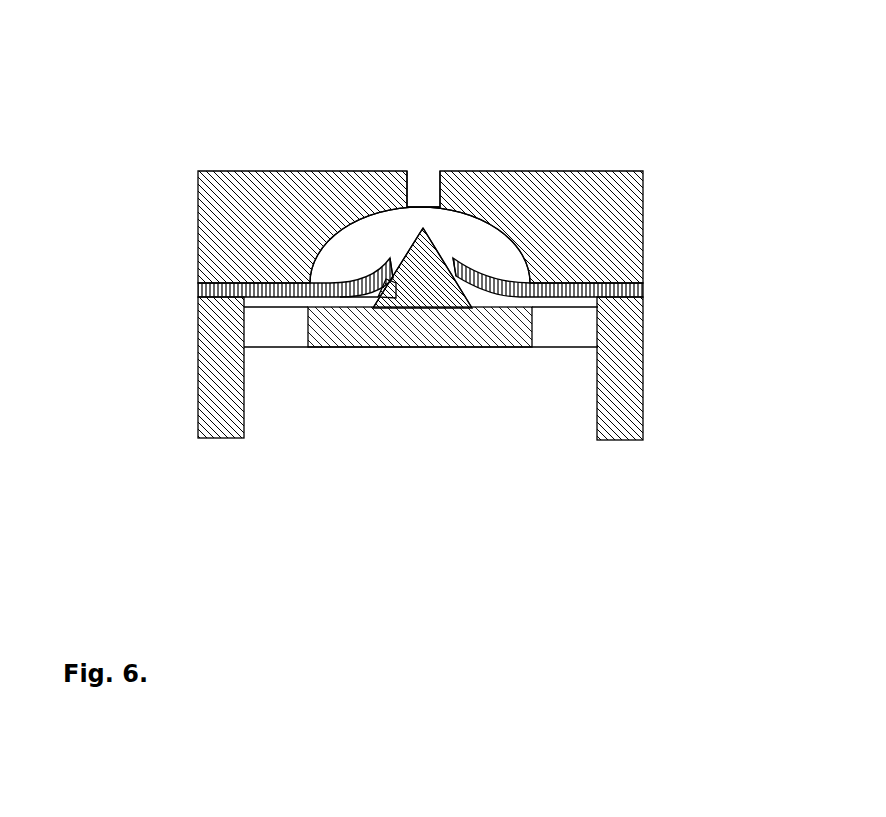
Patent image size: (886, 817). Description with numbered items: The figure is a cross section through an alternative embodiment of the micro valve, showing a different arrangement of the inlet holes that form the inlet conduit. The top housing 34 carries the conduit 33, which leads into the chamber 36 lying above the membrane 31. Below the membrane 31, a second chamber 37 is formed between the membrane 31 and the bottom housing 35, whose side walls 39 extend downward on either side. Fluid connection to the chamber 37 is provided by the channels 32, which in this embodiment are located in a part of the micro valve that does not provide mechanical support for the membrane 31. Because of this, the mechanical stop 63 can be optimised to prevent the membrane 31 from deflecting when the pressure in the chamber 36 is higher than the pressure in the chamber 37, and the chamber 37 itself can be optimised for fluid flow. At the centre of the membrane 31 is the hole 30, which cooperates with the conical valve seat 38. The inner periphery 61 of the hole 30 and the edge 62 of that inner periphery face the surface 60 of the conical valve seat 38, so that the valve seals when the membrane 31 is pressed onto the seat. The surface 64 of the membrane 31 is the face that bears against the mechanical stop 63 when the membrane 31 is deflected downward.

The hole in the membrane 30 is at (397, 243).
The membrane 31 is at (196, 290).
The channels 32 is at (553, 350).
The conduit in the top housing 33 is at (423, 170).
The top housing 34 is at (197, 170).
The bottom housing 35 is at (641, 338).
The chamber 36 is at (497, 236).
The chamber 37 is at (352, 297).
The conical valve seat 38 is at (425, 285).
The side wall 39 is at (603, 357).
The surface of the conical valve seat 60 is at (440, 248).
The inner periphery of the hole 61 is at (393, 255).
The edge of the inner periphery 62 is at (398, 272).
The mechanical stop 63 is at (357, 312).
The surface of the membrane 64 is at (377, 287).